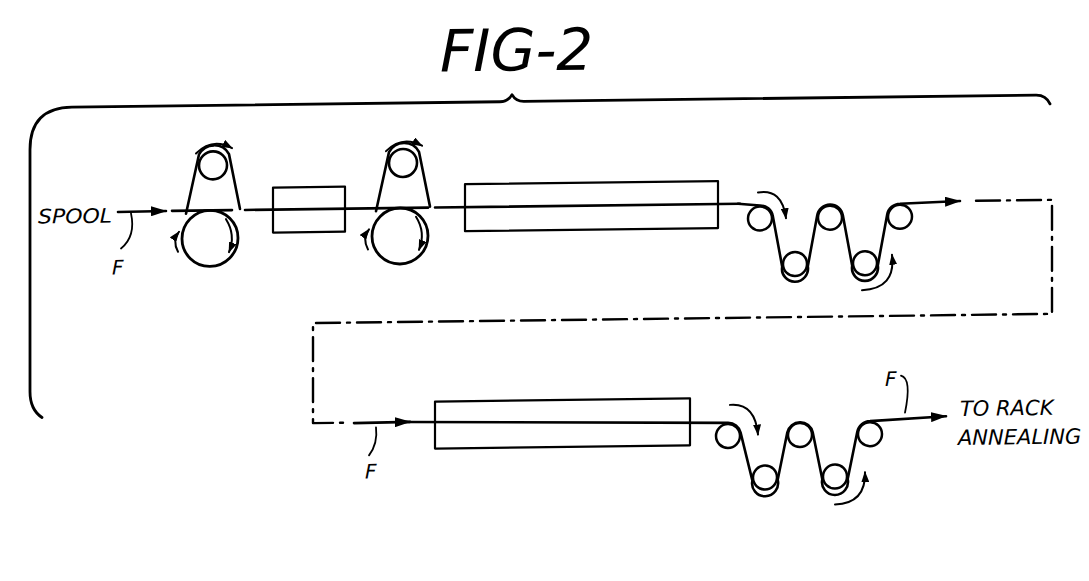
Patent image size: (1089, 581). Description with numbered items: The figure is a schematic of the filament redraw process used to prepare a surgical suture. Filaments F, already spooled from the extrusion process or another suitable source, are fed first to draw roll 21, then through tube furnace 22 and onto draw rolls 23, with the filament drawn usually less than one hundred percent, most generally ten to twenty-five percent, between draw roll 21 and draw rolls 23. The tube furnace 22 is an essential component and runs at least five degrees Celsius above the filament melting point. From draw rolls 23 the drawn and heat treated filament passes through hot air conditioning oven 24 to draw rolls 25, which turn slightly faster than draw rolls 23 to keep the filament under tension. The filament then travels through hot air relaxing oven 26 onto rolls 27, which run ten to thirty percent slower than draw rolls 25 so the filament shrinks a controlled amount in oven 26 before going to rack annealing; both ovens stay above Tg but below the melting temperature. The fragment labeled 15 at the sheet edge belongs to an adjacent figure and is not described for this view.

The draw roll 21 is at (246, 176).
The tube furnace 22 is at (305, 237).
The draw rolls 23 is at (437, 178).
The hot air conditioning oven 24 is at (578, 239).
The draw rolls 25 is at (849, 201).
The hot air relaxing oven 26 is at (563, 454).
The rolls 27 is at (796, 405).
The fragment of numeral from adjacent figure 15 is at (112, 0).